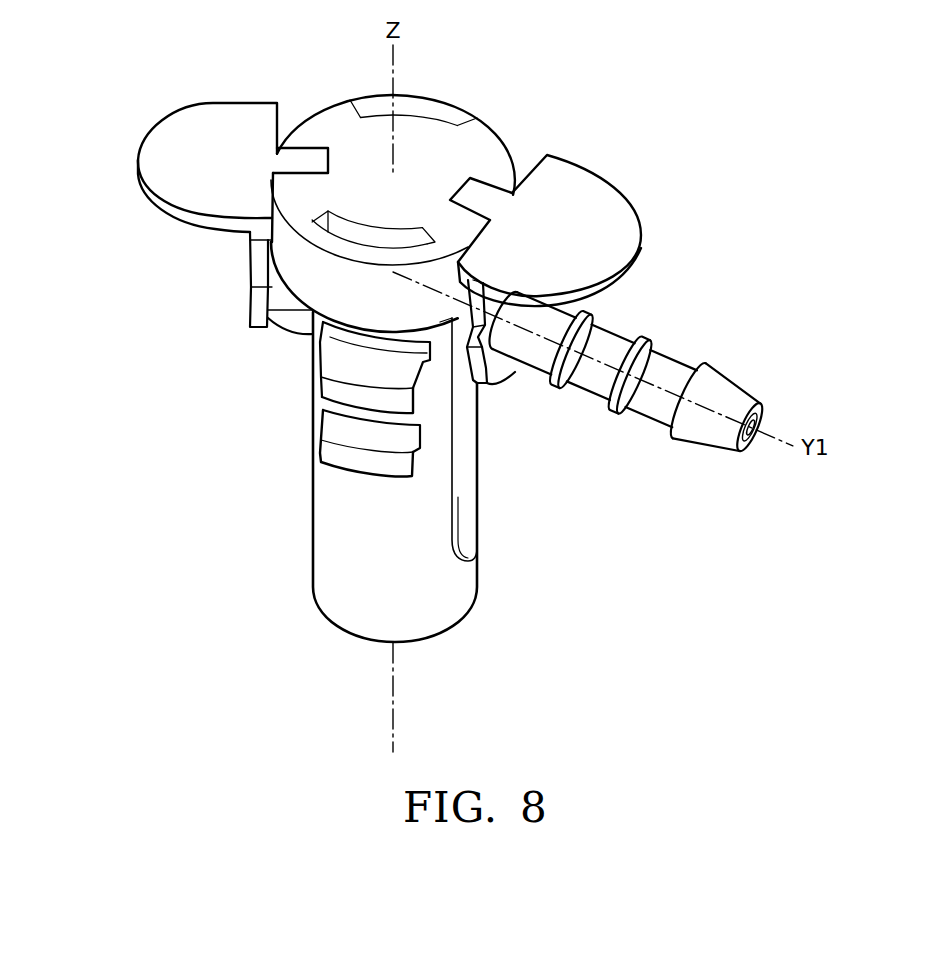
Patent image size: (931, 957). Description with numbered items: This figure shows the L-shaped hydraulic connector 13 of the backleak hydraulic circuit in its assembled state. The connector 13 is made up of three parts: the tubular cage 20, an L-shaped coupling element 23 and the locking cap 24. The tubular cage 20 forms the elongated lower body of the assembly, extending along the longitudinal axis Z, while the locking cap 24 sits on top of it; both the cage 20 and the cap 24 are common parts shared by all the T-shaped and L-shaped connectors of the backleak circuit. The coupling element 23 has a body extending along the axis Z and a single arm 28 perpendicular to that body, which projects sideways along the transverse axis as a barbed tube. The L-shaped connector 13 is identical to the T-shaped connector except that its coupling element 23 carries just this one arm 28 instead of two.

The L-shaped hydraulic connector 13 is at (180, 442).
The tubular cage 20 is at (337, 605).
The L-shaped coupling element 23 is at (206, 233).
The locking cap 24 is at (471, 150).
The arm 28 is at (660, 367).